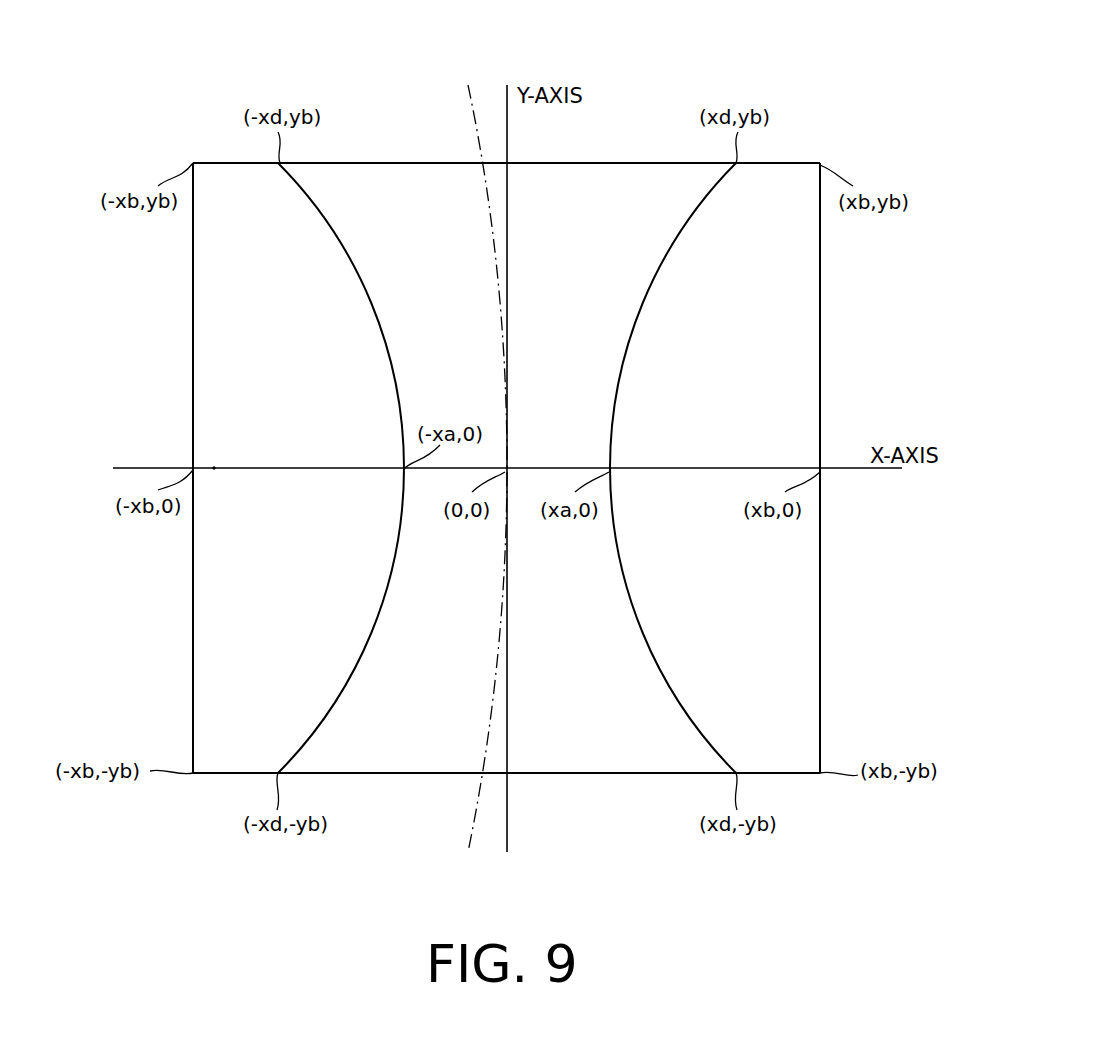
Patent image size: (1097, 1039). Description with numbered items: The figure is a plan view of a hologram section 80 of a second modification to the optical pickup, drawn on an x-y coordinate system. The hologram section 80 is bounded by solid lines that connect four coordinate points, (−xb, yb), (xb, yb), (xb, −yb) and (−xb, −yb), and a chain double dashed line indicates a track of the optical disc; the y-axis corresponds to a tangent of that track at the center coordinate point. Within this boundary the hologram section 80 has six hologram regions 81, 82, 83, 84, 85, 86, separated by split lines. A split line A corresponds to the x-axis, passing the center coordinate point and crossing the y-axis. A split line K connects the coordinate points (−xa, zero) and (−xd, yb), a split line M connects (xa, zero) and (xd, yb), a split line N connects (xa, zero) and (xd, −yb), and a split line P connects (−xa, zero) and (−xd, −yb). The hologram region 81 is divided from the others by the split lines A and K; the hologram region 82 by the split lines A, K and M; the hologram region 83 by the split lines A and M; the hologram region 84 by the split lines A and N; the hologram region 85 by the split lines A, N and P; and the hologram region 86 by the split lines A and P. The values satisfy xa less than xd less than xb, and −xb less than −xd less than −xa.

The hologram section 80 is at (508, 423).
The hologram region 81 is at (200, 322).
The hologram region 82 is at (402, 163).
The hologram region 83 is at (812, 322).
The hologram region 84 is at (812, 588).
The hologram region 85 is at (381, 763).
The hologram region 86 is at (200, 587).
The split line K is at (372, 298).
The split line M is at (642, 298).
The split line P is at (372, 640).
The split line N is at (642, 640).
The split line A is at (235, 467).